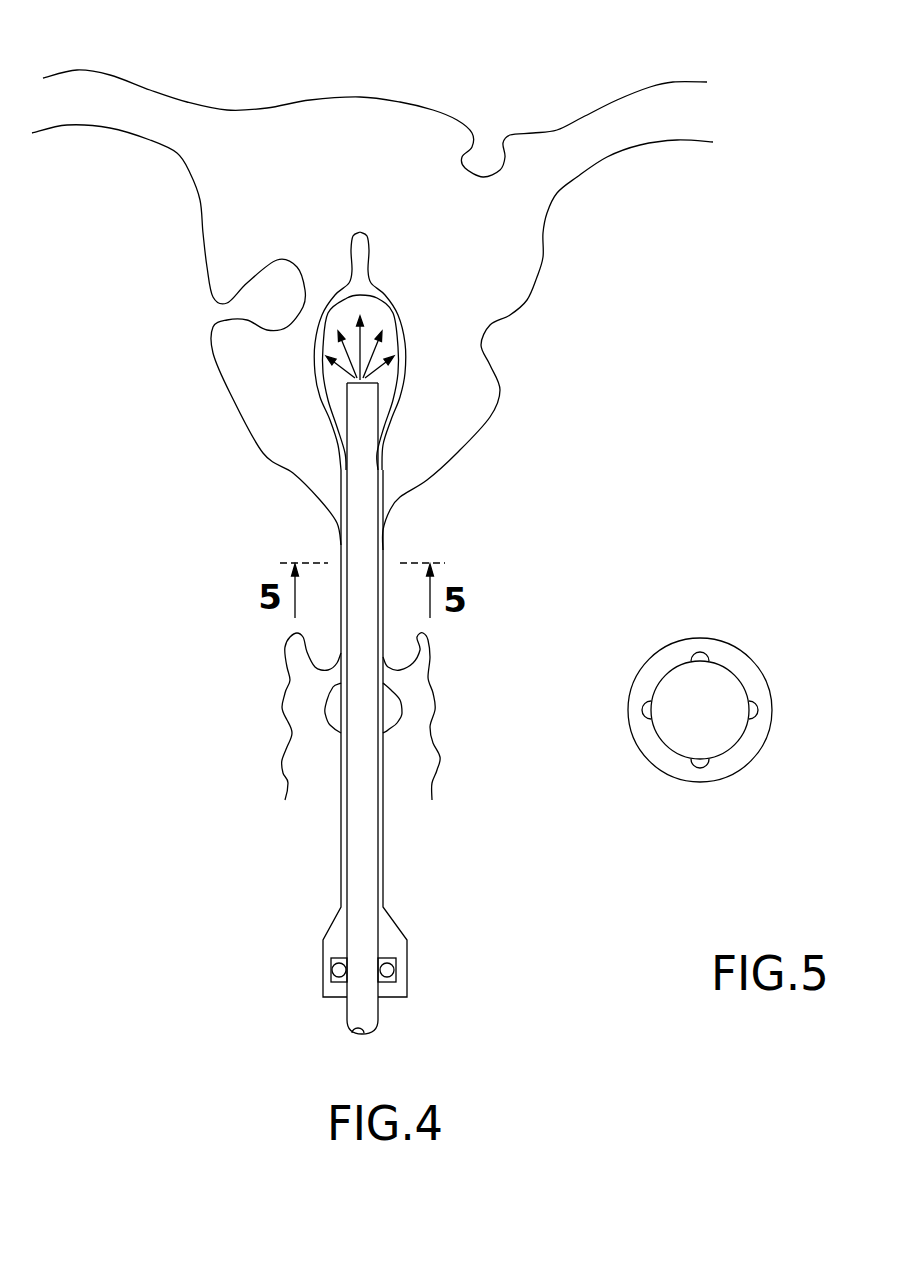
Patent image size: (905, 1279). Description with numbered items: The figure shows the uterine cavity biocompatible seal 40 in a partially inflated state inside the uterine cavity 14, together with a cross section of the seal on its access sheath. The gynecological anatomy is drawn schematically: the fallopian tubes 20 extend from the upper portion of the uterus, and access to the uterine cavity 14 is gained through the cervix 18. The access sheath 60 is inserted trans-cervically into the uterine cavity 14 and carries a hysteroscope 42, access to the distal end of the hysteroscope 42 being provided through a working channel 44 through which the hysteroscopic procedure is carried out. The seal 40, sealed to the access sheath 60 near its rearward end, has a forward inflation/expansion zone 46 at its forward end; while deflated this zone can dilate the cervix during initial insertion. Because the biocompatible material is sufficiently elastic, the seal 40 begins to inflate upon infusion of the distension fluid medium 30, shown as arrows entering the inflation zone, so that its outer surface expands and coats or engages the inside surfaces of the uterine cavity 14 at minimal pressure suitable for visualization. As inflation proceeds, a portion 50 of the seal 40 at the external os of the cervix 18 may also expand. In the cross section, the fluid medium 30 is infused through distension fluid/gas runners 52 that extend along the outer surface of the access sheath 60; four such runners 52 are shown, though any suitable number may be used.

In FIG. 4, the uterine cavity 14 is at (368, 167).
In FIG. 4, the fallopian tubes 20 is at (142, 83).
In FIG. 4, the cervix 18 is at (327, 653).
In FIG. 4, the fluid medium 30 is at (380, 338).
In FIG. 4, the uterine cavity biocompatible seal 40 is at (316, 378).
In FIG. 5, the uterine cavity biocompatible seal 40 is at (757, 667).
In FIG. 4, the hysteroscope 42 is at (331, 889).
In FIG. 4, the working channel 44 is at (363, 915).
In FIG. 4, the forward inflation/expansion zone 46 is at (410, 297).
In FIG. 4, the portion of the seal 50 is at (313, 726).
In FIG. 5, the distension fluid/gas runners 52 is at (702, 650).
In FIG. 5, the access sheath 60 is at (733, 750).